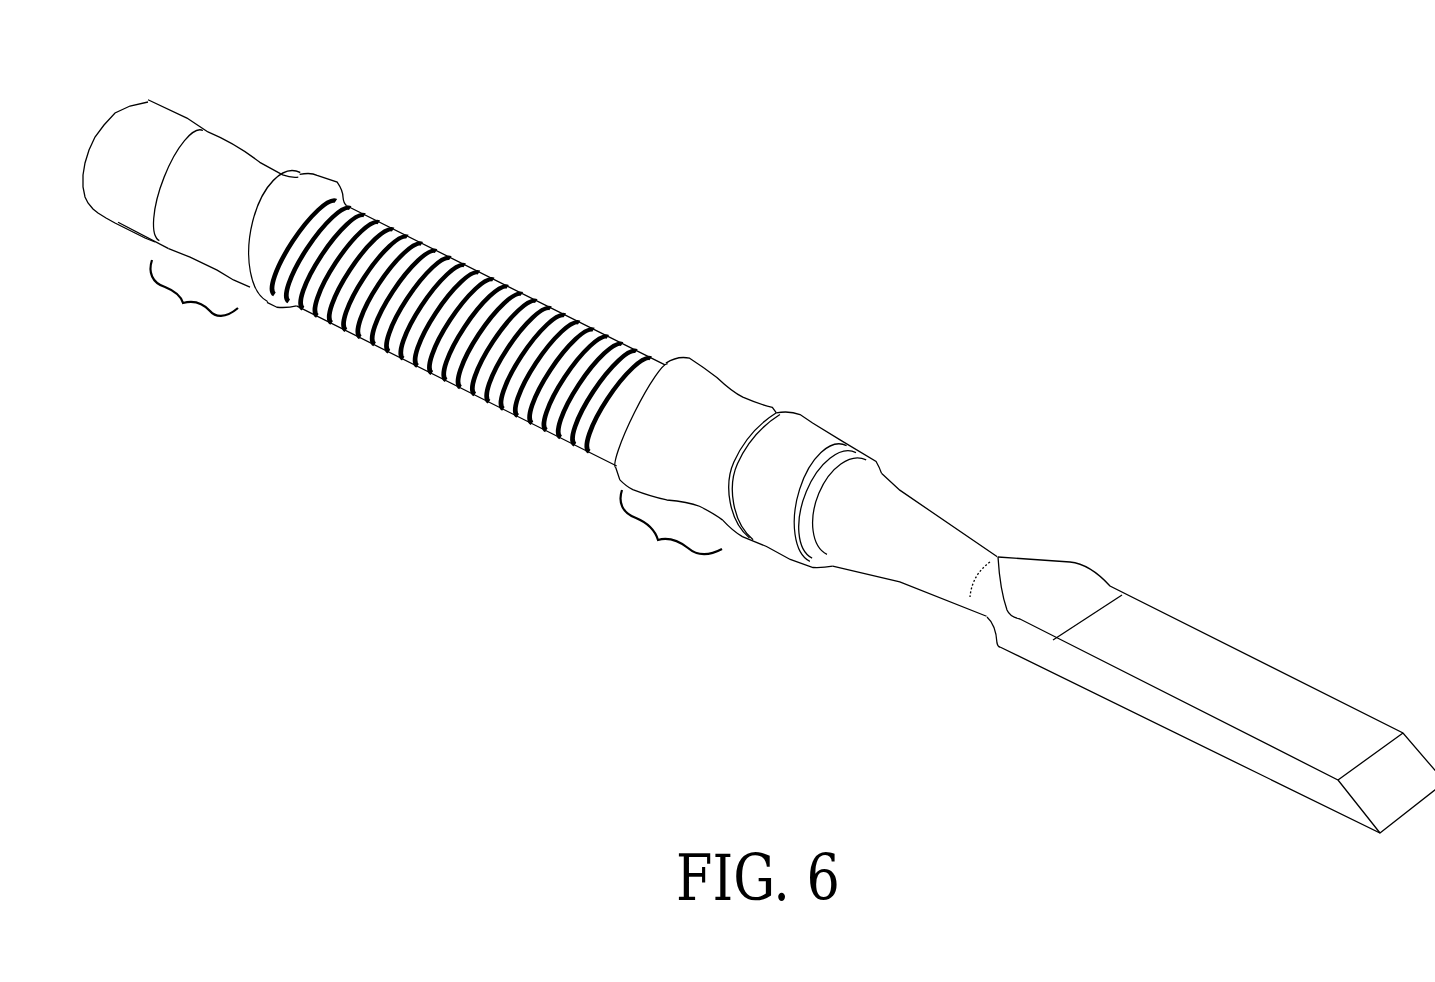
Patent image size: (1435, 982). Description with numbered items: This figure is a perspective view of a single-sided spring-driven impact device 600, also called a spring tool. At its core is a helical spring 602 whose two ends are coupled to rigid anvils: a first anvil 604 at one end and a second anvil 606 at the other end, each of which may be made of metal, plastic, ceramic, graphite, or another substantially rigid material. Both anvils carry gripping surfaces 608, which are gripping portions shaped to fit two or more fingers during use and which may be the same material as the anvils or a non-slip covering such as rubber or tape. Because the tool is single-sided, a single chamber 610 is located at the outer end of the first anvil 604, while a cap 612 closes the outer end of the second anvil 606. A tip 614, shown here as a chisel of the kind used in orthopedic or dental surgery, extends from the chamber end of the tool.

The single-sided spring-driven impact device 600 is at (183, 60).
The helical spring 602 is at (464, 327).
The first anvil 604 is at (692, 439).
The second anvil 606 is at (253, 217).
The gripping surfaces 608 is at (183, 303).
The single chamber 610 is at (797, 489).
The cap 612 is at (154, 174).
The tip 614 is at (1157, 612).